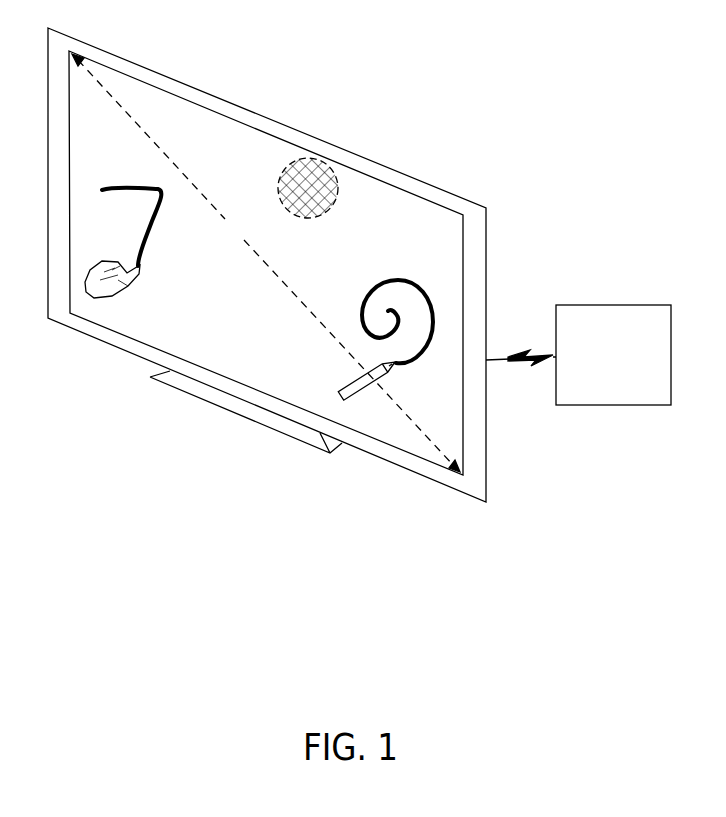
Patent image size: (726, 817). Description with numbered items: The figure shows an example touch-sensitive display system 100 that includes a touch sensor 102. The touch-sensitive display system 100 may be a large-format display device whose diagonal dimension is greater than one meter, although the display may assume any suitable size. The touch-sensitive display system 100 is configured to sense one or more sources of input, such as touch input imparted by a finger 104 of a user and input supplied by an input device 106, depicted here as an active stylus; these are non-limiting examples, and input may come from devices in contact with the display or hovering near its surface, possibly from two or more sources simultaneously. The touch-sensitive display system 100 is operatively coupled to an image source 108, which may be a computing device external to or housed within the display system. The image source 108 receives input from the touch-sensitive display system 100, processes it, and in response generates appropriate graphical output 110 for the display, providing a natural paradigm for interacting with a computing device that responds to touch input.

The touch-sensitive display system 100 is at (310, 66).
The touch sensor 102 is at (329, 171).
The finger 104 is at (139, 271).
The input device 106 is at (344, 400).
The image source 108 is at (598, 390).
The graphical output 110 is at (135, 189).